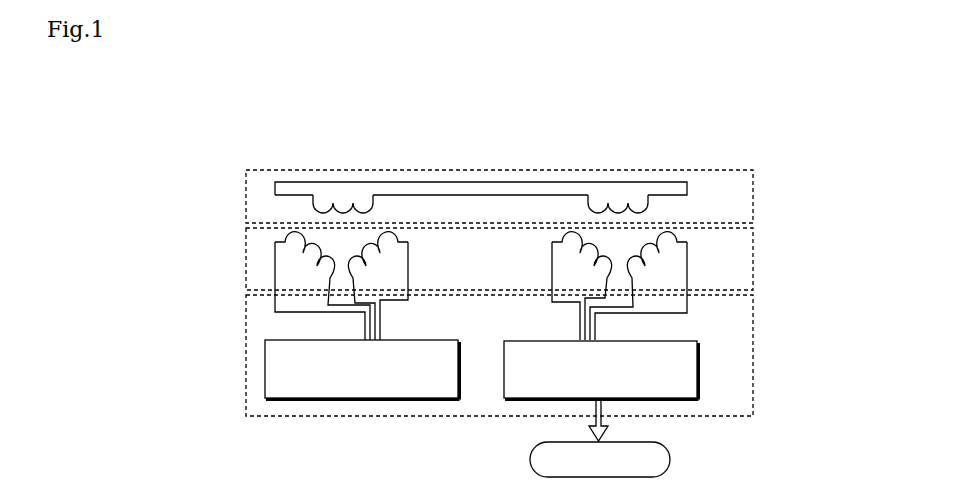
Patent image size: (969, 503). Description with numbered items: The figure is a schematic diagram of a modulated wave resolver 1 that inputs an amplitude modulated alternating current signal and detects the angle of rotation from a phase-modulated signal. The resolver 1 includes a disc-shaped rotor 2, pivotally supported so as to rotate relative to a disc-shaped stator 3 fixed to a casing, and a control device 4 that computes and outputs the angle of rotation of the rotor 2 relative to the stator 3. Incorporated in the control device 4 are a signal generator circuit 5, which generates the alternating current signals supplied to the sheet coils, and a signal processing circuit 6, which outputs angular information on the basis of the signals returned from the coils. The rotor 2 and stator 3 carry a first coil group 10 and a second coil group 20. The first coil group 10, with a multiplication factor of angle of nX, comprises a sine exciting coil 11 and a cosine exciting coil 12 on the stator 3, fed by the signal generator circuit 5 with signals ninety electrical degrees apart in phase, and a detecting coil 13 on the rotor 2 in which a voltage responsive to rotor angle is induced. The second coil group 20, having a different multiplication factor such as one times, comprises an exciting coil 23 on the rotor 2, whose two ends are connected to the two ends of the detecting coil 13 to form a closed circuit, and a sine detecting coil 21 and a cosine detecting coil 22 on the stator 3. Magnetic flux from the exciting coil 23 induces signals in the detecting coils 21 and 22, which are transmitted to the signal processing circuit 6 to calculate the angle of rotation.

The resolver 1 is at (530, 277).
The rotor 2 is at (754, 187).
The stator 3 is at (754, 243).
The control device 4 is at (754, 346).
The signal generator circuit 5 is at (460, 372).
The signal processing circuit 6 is at (698, 372).
The first coil group 10 is at (317, 209).
The sine exciting coil 11 is at (290, 236).
The cosine exciting coil 12 is at (396, 238).
The detecting coil 13 is at (312, 202).
The second coil group 20 is at (598, 209).
The sine detecting coil 21 is at (565, 238).
The cosine detecting coil 22 is at (674, 238).
The exciting coil 23 is at (588, 202).